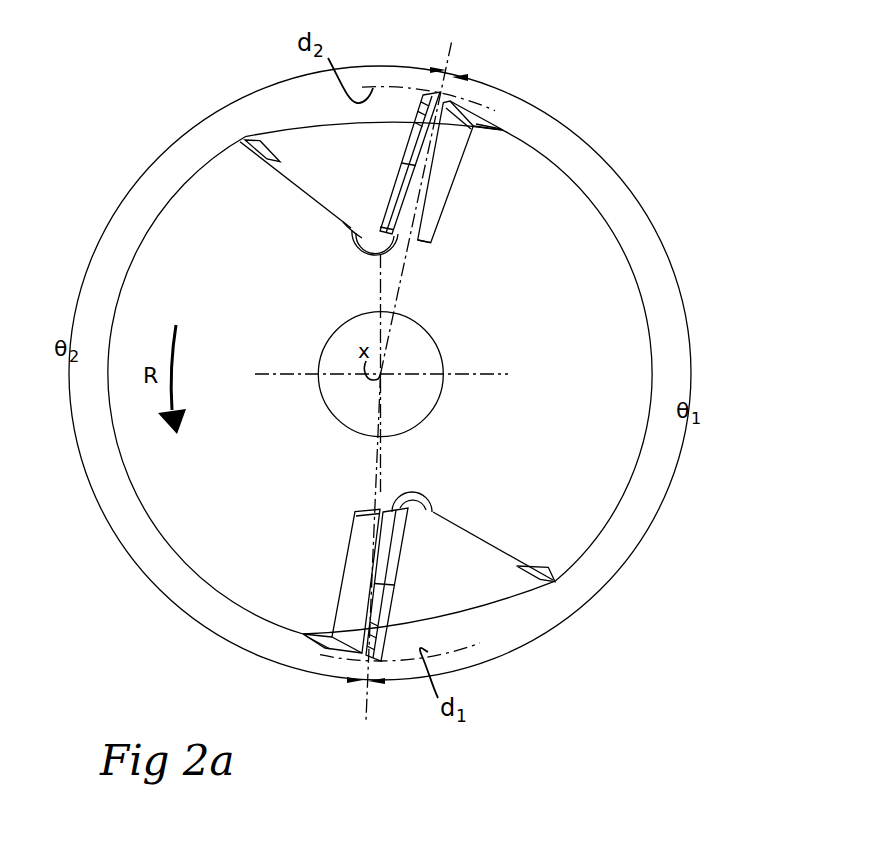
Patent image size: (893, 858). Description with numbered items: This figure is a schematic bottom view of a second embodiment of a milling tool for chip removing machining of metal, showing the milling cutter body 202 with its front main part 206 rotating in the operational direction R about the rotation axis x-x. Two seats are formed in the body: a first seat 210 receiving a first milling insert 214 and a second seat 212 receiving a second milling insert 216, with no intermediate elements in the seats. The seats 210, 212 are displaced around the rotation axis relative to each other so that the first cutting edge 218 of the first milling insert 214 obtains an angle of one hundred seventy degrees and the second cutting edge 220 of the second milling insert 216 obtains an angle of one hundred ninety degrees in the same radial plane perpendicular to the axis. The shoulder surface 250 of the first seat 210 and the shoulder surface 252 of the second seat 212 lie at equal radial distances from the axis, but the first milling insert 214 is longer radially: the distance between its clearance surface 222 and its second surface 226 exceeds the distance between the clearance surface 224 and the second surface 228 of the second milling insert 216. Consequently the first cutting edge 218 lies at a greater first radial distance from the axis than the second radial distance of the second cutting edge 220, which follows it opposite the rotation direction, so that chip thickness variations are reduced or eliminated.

The milling cutter body 202 is at (660, 244).
The front main part 206 is at (636, 330).
The first seat 210 is at (322, 672).
The second seat 212 is at (528, 117).
The first milling insert 214 is at (355, 576).
The second milling insert 216 is at (446, 163).
The first cutting edge 218 is at (360, 666).
The second cutting edge 220 is at (446, 96).
The clearance surface 222 is at (333, 652).
The clearance surface 224 is at (478, 120).
The second surface 226 is at (370, 513).
The second surface 228 is at (427, 254).
The shoulder surface 250 is at (383, 513).
The shoulder surface 252 is at (410, 243).